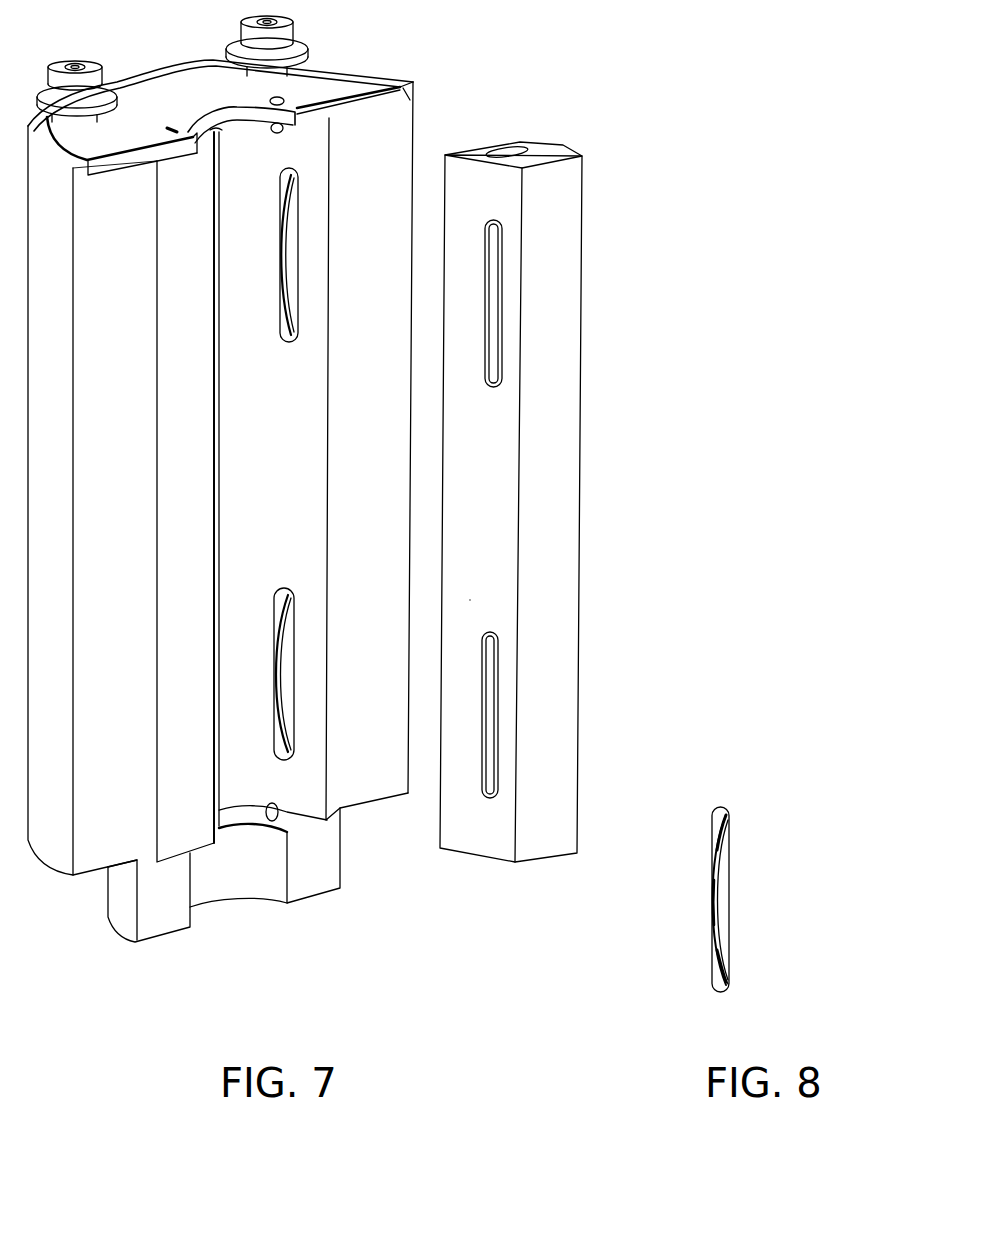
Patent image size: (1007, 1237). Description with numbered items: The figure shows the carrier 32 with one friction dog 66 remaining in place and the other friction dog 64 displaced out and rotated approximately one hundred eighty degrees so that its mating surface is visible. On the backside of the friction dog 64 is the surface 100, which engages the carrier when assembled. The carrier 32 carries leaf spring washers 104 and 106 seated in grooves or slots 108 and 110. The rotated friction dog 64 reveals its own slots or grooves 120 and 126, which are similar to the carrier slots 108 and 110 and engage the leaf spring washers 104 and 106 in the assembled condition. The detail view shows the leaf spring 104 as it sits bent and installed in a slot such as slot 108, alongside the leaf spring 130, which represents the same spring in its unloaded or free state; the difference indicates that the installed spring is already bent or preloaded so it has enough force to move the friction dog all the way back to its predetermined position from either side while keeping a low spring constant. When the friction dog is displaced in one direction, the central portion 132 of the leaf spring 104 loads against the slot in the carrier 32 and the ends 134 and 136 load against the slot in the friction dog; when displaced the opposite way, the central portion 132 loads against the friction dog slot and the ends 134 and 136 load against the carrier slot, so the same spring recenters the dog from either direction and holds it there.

In FIG. 7, the carrier 32 is at (377, 117).
In FIG. 7, the slot 108 is at (297, 175).
In FIG. 8, the slot 108 is at (727, 806).
In FIG. 7, the leaf spring washer 104 is at (290, 287).
In FIG. 8, the leaf spring washer 104 is at (730, 835).
In FIG. 7, the slot 120 is at (500, 343).
In FIG. 7, the friction dog 66 is at (185, 478).
In FIG. 7, the friction dog 64 is at (545, 480).
In FIG. 7, the surface 100 is at (485, 525).
In FIG. 7, the slot 110 is at (283, 603).
In FIG. 7, the leaf spring washer 106 is at (282, 687).
In FIG. 7, the slot 126 is at (495, 738).
In FIG. 8, the end of leaf spring 136 is at (730, 828).
In FIG. 8, the central portion 132 is at (713, 903).
In FIG. 8, the leaf spring 130 is at (730, 975).
In FIG. 8, the end of leaf spring 134 is at (730, 978).